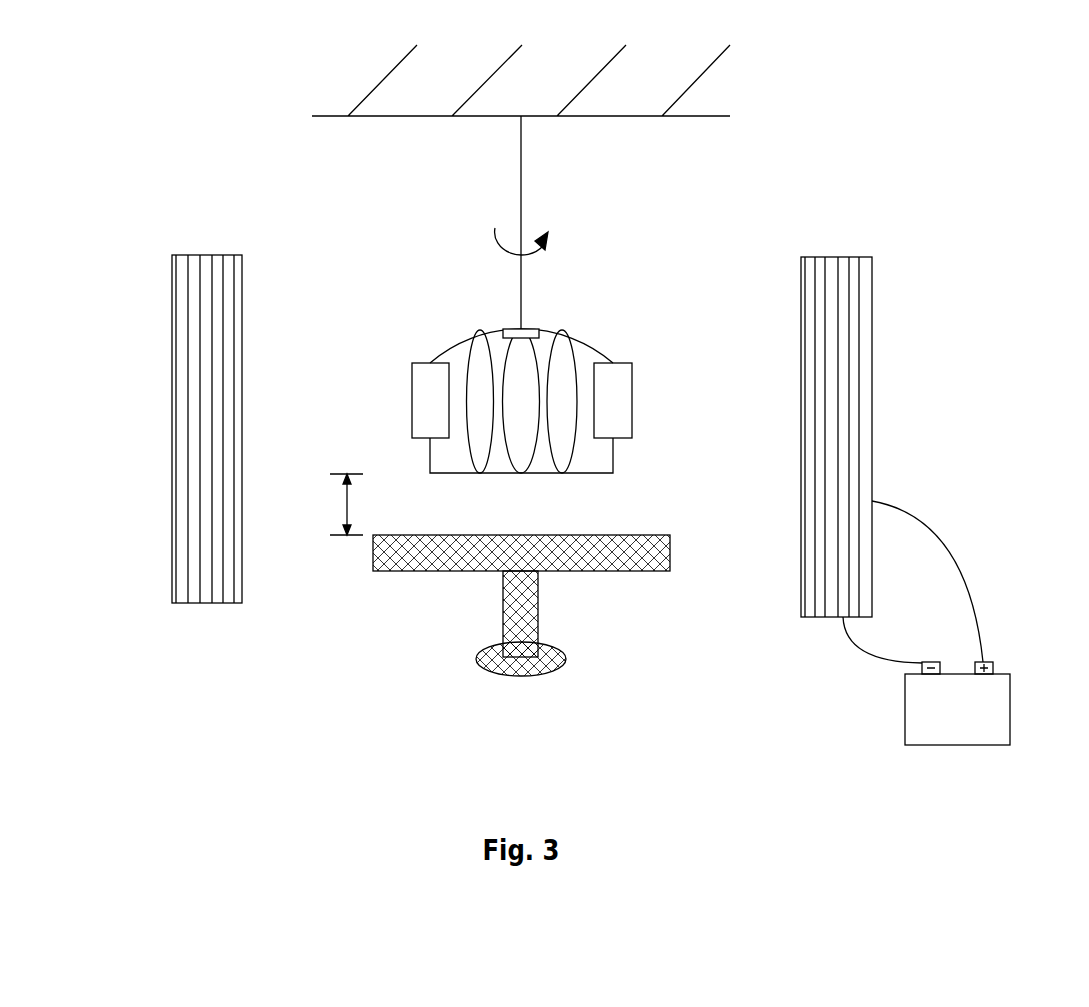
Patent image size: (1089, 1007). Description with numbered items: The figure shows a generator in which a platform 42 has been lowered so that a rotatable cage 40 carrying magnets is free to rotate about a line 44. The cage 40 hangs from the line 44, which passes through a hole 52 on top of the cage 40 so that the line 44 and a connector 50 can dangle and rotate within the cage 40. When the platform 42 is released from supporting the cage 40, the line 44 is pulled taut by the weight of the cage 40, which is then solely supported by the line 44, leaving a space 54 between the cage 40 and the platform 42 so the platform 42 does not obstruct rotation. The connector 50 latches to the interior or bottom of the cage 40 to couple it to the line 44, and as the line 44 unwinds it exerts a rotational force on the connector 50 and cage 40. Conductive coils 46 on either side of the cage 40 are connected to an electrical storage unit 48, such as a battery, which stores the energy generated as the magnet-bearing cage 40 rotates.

The cage 40 is at (580, 327).
The platform 42 is at (640, 533).
The line 44 is at (522, 193).
The conductive coils 46 is at (207, 255).
The electrical storage unit 48 is at (1000, 670).
The connector 50 is at (530, 328).
The hole 52 is at (517, 324).
The space 54 is at (338, 472).